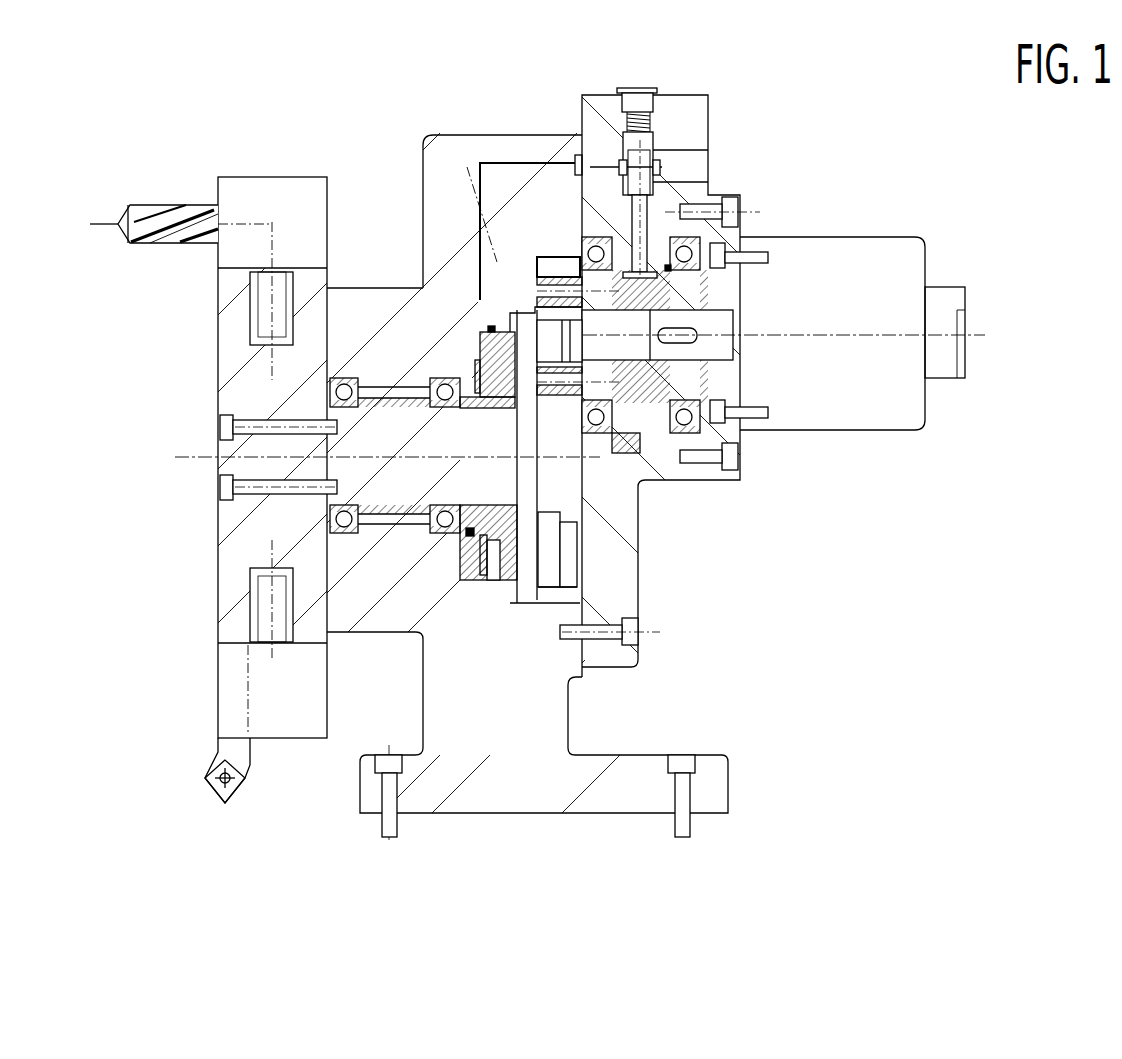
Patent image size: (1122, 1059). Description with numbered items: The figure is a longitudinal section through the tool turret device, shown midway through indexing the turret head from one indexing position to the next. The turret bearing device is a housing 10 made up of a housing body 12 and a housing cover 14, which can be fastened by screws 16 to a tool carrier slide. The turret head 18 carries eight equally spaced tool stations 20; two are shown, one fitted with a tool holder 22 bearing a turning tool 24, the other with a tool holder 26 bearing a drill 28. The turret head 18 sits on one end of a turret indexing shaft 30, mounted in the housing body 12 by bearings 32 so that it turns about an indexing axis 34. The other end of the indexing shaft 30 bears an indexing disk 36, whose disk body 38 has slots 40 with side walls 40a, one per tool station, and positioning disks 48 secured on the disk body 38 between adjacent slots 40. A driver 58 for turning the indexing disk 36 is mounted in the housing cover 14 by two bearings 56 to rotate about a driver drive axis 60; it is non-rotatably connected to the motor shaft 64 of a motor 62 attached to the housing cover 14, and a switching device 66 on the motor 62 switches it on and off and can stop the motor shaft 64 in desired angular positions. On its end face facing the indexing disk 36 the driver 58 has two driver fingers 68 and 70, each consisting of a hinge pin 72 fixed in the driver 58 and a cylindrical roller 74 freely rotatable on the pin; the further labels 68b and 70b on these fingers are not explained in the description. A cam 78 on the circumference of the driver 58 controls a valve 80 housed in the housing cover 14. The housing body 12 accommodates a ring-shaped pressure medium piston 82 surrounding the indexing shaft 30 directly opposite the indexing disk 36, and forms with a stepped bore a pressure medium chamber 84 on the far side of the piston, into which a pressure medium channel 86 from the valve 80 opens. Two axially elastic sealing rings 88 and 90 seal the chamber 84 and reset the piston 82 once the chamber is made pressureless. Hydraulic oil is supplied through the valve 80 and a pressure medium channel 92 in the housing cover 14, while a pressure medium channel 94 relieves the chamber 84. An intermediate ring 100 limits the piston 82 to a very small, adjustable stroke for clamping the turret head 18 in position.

The housing 10 is at (594, 693).
The housing body 12 is at (522, 783).
The housing cover 14 is at (632, 652).
The screws 16 is at (688, 790).
The turret head 18 is at (205, 624).
The tool stations 20 is at (253, 308).
The tool holder 22 is at (272, 715).
The turning tool 24 is at (213, 788).
The tool holder 26 is at (285, 213).
The drill 28 is at (187, 207).
The turret indexing shaft 30 is at (320, 500).
The bearings 32 is at (428, 378).
The indexing axis 34 is at (190, 445).
The indexing disk 36 is at (562, 486).
The disk body 38 is at (575, 512).
The slots 40 is at (510, 313).
The side walls of the slots 40a is at (577, 590).
The positioning disk 48 is at (552, 280).
The bearings 56 is at (603, 237).
The driver 58 is at (706, 390).
The driver drive axis 60 is at (762, 337).
The motor 62 is at (918, 260).
The motor shaft 64 is at (723, 323).
The switching device 66 is at (960, 307).
The driver finger 68 is at (537, 292).
The coupling element portion 68b is at (465, 165).
The driver finger 70 is at (545, 418).
The sleeve portion 70b is at (520, 408).
The hinge pin 72 is at (493, 325).
The cylindrical roller 74 is at (535, 292).
The cam 78 is at (628, 466).
The valve 80 is at (707, 140).
The pressure medium piston 82 is at (503, 585).
The pressure medium chamber 84 is at (495, 582).
The pressure medium channel 86 is at (427, 142).
The sealing ring 88 is at (472, 535).
The sealing ring 90 is at (430, 682).
The pressure medium channel 92 is at (707, 163).
The pressure medium channel 94 is at (707, 177).
The intermediate ring 100 is at (480, 545).